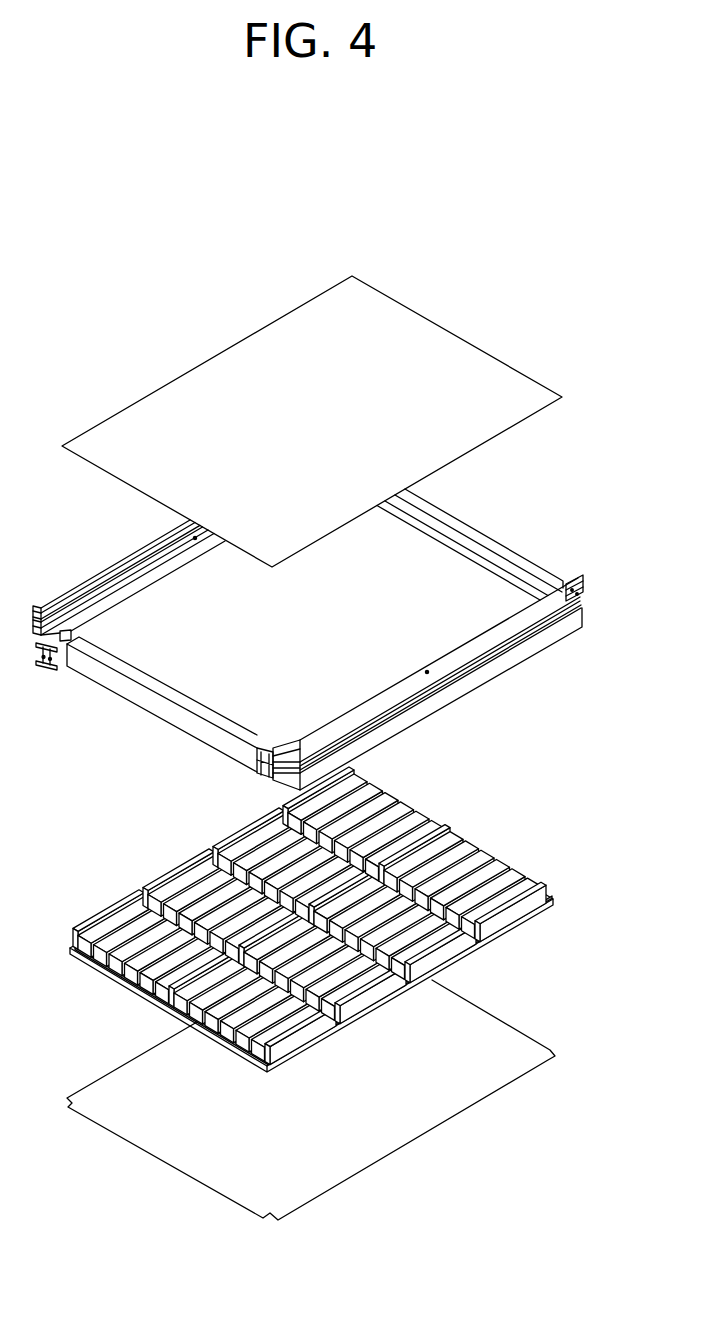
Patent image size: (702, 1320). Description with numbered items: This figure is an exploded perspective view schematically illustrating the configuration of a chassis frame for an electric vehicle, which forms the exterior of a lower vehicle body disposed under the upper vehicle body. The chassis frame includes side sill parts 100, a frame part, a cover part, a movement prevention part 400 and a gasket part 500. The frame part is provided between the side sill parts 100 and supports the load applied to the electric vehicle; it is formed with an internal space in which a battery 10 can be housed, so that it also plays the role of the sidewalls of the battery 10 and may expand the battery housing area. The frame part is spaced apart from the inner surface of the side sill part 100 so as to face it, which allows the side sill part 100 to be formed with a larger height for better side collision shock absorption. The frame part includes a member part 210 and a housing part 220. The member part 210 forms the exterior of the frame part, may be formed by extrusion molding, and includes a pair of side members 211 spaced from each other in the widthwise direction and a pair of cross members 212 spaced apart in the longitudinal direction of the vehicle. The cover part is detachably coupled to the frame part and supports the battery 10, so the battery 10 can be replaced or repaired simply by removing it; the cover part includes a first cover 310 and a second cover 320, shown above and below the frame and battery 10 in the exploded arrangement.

The battery 10 is at (458, 858).
The side sill parts 100 is at (72, 591).
The member part 210 is at (308, 639).
The side members 211 is at (113, 622).
The cross members 212 is at (132, 694).
The housing part 220 is at (429, 572).
The first cover 310 is at (220, 385).
The second cover 320 is at (470, 1083).
The movement prevention part 400 is at (500, 930).
The gasket part 500 is at (542, 887).